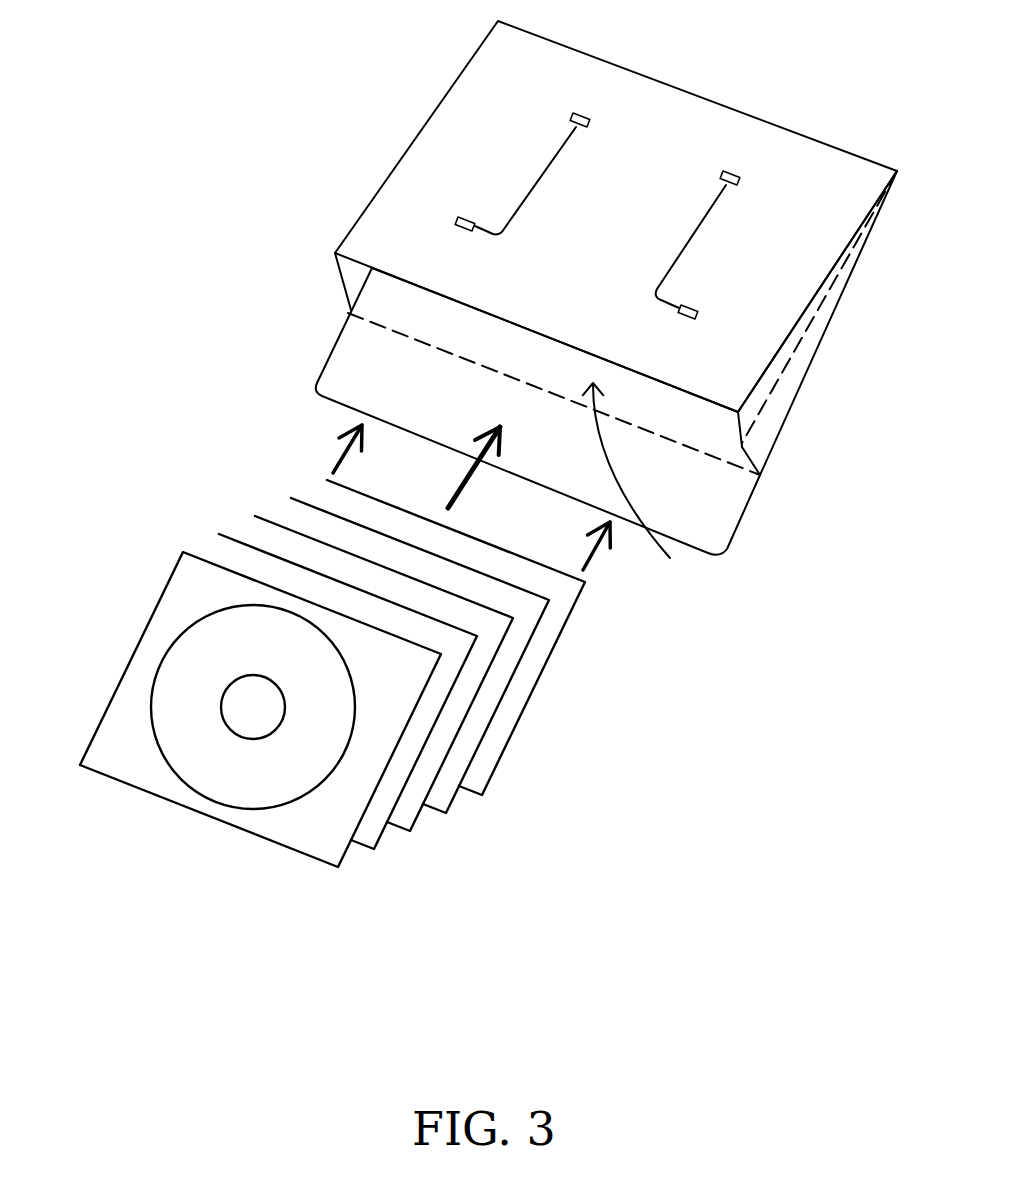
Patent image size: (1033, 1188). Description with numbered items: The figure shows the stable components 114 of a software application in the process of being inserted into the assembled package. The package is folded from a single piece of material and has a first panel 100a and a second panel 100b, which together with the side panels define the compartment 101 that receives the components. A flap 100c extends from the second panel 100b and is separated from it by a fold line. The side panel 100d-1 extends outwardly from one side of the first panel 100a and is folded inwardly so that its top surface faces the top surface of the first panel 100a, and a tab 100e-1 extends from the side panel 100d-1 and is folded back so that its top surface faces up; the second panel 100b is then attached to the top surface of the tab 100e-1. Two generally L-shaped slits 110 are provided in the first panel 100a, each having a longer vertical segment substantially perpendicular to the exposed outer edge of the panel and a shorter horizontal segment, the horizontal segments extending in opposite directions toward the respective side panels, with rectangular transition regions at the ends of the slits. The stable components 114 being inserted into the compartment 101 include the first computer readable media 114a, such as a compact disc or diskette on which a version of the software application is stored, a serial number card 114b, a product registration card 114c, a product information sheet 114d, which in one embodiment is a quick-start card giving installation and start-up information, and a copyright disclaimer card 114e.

The first panel 100a is at (490, 57).
The second panel 100b is at (382, 312).
The flap 100c is at (337, 372).
The side panel 100d-1 is at (750, 416).
The tab 100e-1 is at (759, 456).
The slits 110 is at (672, 222).
The compartment 101 is at (635, 488).
The stable components 114 is at (220, 437).
The first computer readable media 114a is at (340, 855).
The serial number card 114b is at (375, 828).
The product registration card 114c is at (408, 817).
The product information sheet 114d is at (443, 800).
The copyright disclaimer card 114e is at (478, 783).